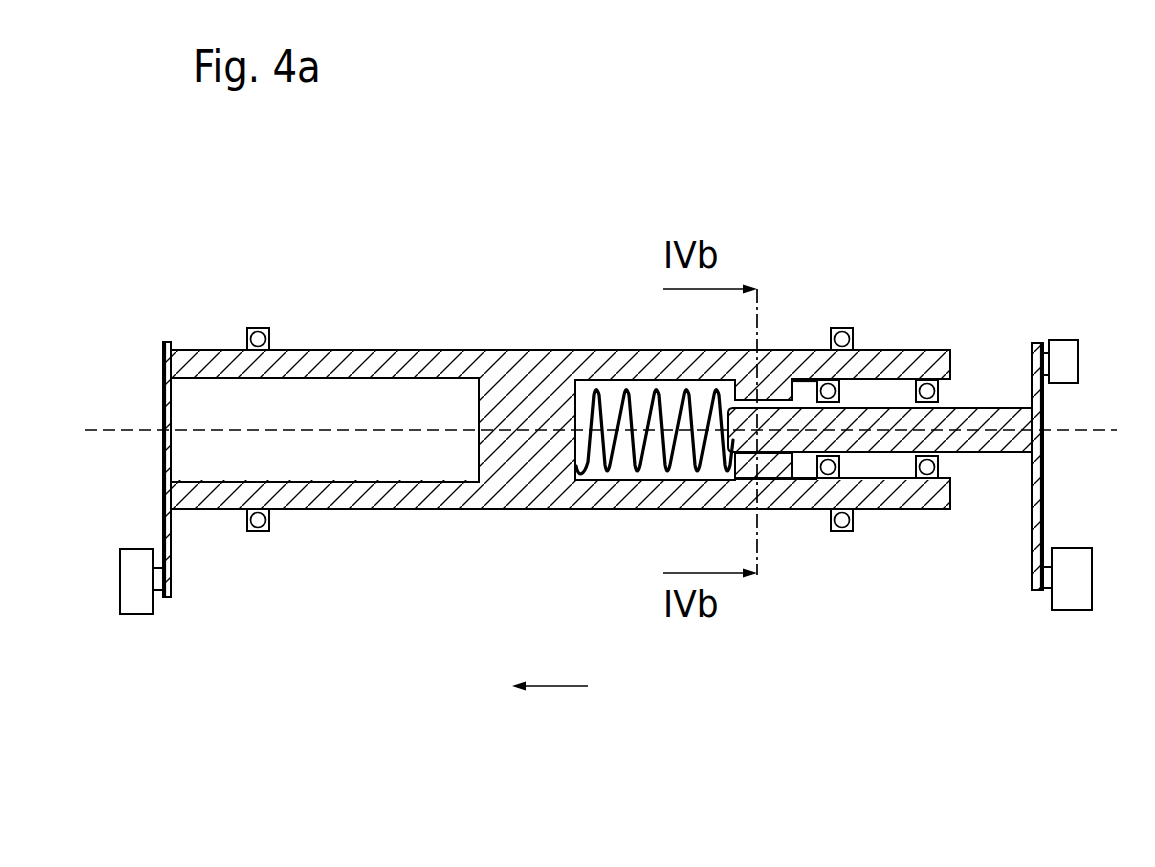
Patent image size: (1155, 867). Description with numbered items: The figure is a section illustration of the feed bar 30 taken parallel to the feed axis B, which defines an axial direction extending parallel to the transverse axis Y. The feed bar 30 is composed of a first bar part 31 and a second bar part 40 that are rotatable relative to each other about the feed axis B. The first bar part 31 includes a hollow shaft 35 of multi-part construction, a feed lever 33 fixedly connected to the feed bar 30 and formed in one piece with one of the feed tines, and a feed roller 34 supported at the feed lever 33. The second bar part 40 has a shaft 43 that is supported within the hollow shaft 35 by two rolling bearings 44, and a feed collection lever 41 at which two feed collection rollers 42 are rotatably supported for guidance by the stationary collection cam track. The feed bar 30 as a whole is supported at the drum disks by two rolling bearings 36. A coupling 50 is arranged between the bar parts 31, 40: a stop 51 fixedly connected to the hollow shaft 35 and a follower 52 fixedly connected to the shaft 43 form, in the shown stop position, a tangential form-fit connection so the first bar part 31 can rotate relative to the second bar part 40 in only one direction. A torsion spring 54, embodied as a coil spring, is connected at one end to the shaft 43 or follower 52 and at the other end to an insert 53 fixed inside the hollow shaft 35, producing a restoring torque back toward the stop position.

The feed bar 30 is at (641, 183).
The first bar part 31 is at (560, 377).
The feed lever 33 is at (212, 469).
The feed roller 34 is at (141, 624).
The hollow shaft 35 is at (335, 538).
The rolling bearings 36 is at (549, 388).
The second bar part 40 is at (1013, 289).
The feed collection lever 41 is at (1075, 466).
The feed collection rollers 42 is at (1067, 478).
The shaft 43 is at (880, 473).
The rolling bearings 44 is at (878, 379).
The coupling 50 is at (651, 314).
The stop 51 is at (801, 333).
The follower 52 is at (779, 530).
The insert 53 is at (460, 486).
The torsion spring 54 is at (654, 492).
The feed axis B is at (603, 385).
The transverse axis Y is at (535, 688).